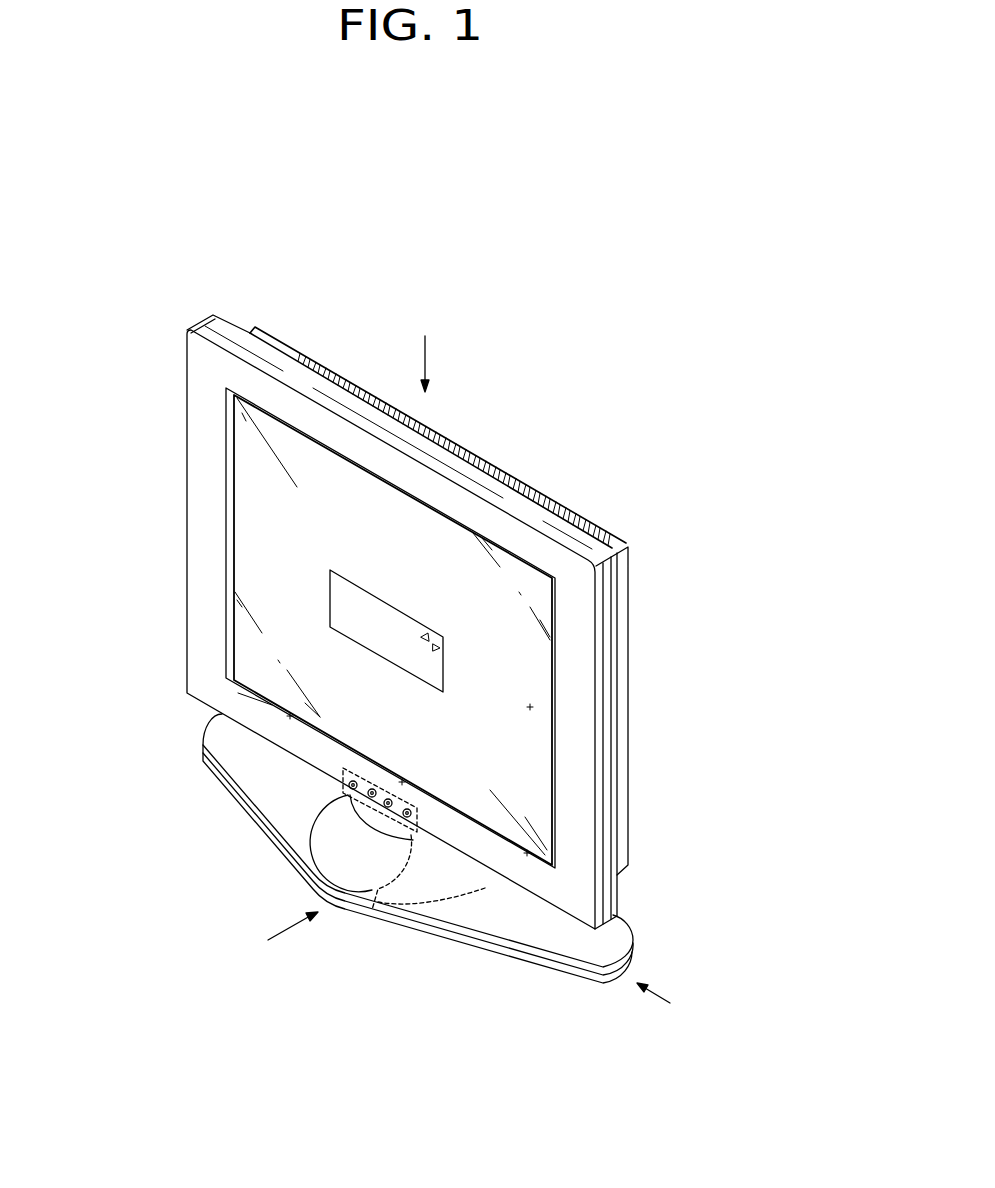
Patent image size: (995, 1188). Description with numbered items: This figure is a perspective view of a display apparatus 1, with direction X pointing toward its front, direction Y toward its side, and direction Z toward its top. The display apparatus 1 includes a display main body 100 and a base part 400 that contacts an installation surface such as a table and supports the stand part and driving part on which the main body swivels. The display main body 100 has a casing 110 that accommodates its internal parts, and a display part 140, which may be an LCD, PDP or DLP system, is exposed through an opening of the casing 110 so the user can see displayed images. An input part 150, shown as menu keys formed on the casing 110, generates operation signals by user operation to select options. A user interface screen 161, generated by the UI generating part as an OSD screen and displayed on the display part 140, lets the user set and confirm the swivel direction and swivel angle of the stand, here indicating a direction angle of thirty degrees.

The display apparatus 1 is at (655, 428).
The display main body 100 is at (170, 322).
The casing 110 is at (187, 443).
The display part 140 is at (258, 555).
The input part 150 is at (372, 910).
The user interface screen 161 is at (358, 641).
The base part 400 is at (510, 958).